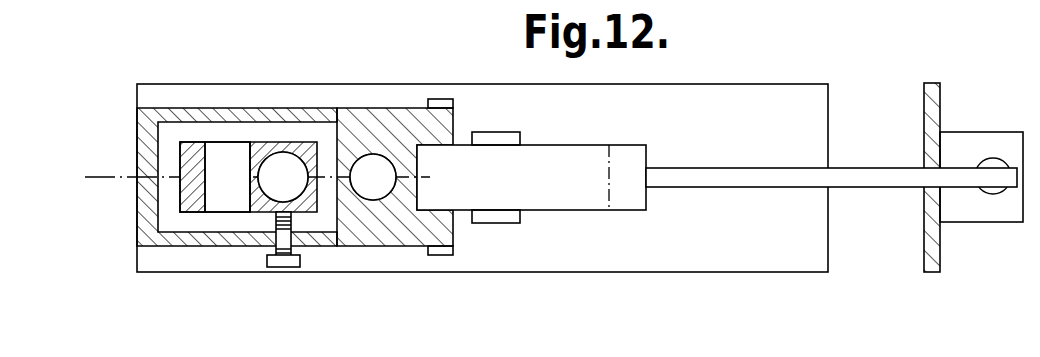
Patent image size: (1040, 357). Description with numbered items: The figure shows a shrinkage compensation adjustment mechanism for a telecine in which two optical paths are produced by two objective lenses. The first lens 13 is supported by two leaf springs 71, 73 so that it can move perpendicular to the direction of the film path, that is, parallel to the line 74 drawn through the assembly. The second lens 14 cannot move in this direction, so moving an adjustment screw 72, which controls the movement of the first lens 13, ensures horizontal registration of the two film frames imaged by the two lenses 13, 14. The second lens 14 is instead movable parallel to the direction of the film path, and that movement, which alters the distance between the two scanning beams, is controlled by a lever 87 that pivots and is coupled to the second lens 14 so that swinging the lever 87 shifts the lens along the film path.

The first lens 13 is at (277, 155).
The second lens 14 is at (377, 155).
The leaf spring 71 is at (219, 143).
The adjustment screw 72 is at (299, 261).
The leaf spring 73 is at (222, 212).
The line 74 is at (104, 175).
The lever 87 is at (743, 168).